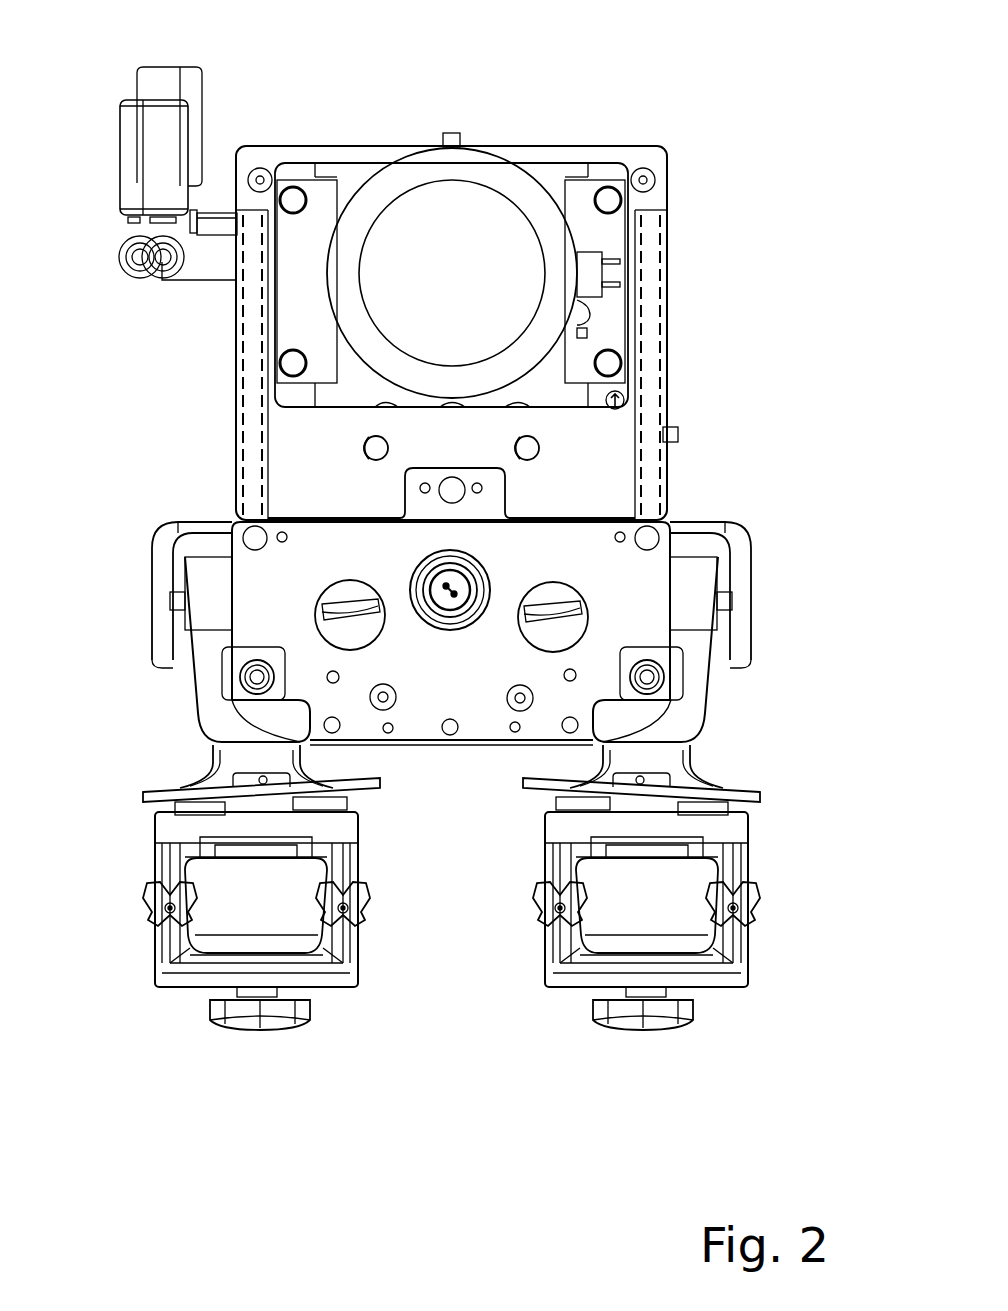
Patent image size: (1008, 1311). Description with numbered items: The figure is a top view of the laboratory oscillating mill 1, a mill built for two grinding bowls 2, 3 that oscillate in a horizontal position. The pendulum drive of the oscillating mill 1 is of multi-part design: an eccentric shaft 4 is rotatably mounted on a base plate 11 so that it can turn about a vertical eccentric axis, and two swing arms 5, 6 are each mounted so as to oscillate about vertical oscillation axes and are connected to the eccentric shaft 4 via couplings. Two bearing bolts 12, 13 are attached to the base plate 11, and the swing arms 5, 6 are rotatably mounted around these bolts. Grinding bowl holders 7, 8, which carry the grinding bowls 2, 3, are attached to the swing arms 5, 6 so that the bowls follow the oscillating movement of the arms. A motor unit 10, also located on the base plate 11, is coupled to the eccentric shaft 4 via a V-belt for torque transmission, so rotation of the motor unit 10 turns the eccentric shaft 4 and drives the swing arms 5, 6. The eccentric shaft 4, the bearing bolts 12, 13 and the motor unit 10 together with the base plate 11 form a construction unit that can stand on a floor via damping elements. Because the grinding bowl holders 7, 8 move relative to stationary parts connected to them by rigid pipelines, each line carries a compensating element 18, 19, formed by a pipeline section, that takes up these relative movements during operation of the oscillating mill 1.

The oscillating mill 1 is at (773, 100).
The grinding bowl 2 is at (227, 890).
The grinding bowl 3 is at (672, 890).
The eccentric shaft 4 is at (455, 583).
The swing arm 5 is at (242, 758).
The swing arm 6 is at (660, 758).
The grinding bowl holder 7 is at (123, 1018).
The grinding bowl holder 8 is at (526, 1018).
The motor unit 10 is at (422, 228).
The base plate 11 is at (330, 450).
The bearing bolt 12 is at (255, 677).
The bearing bolt 13 is at (650, 677).
The compensating element 18 is at (143, 528).
The compensating element 19 is at (767, 528).